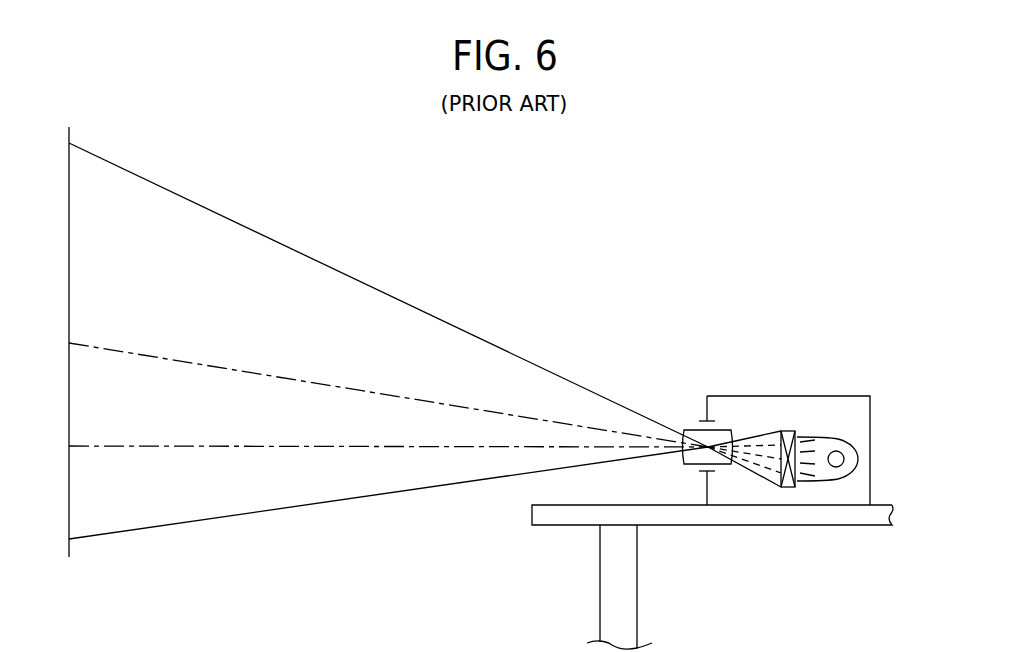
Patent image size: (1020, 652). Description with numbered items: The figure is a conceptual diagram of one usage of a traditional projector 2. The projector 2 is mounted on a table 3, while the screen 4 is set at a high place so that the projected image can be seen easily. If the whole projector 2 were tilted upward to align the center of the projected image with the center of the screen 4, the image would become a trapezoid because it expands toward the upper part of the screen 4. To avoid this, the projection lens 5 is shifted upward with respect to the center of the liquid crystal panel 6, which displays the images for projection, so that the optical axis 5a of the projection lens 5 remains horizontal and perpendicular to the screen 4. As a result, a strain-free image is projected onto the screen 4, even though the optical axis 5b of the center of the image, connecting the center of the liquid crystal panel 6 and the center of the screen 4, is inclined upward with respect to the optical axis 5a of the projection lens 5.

The projector 2 is at (808, 396).
The table 3 is at (545, 525).
The screen 4 is at (69, 243).
The projection lens 5 is at (692, 428).
The optical axis of the projection lens 5a is at (125, 444).
The optical axis of center of the image 5b is at (187, 360).
The liquid crystal panel 6 is at (790, 430).